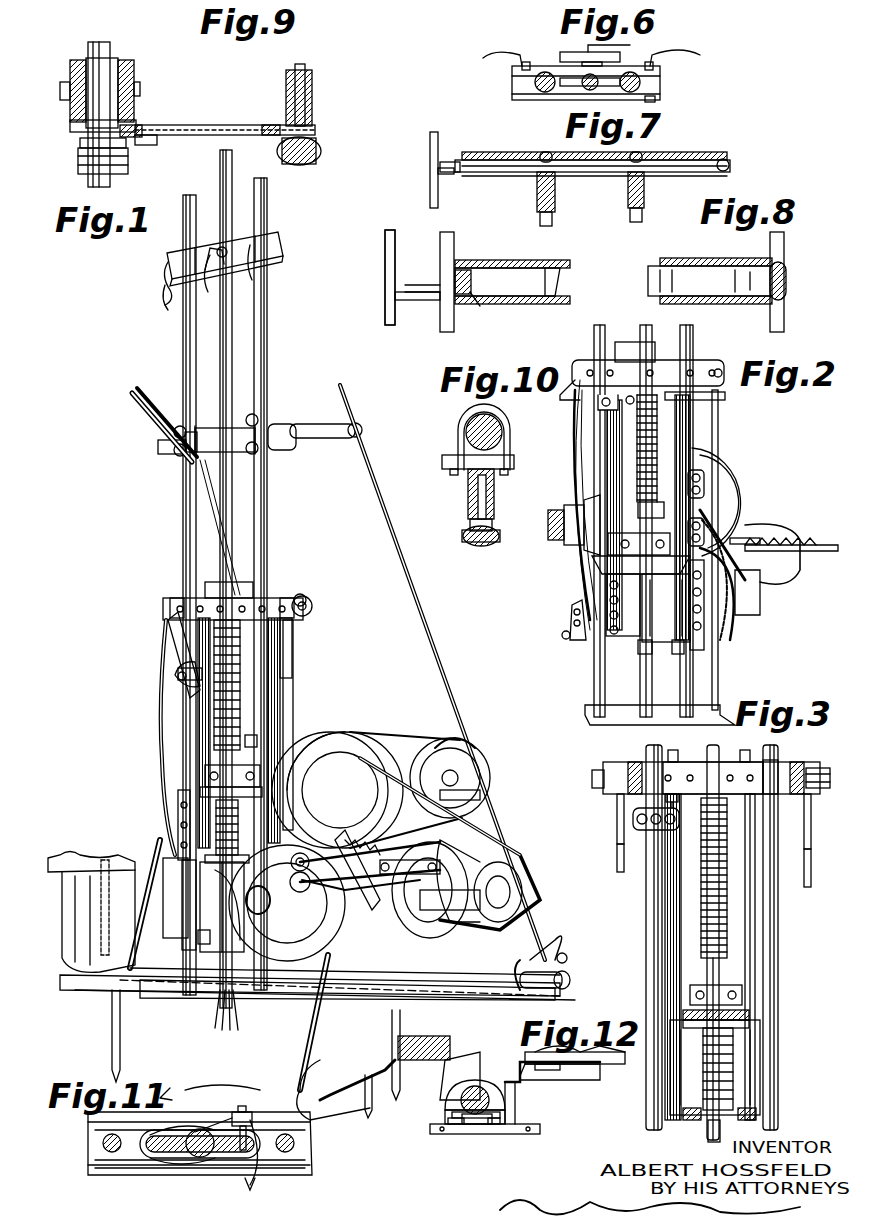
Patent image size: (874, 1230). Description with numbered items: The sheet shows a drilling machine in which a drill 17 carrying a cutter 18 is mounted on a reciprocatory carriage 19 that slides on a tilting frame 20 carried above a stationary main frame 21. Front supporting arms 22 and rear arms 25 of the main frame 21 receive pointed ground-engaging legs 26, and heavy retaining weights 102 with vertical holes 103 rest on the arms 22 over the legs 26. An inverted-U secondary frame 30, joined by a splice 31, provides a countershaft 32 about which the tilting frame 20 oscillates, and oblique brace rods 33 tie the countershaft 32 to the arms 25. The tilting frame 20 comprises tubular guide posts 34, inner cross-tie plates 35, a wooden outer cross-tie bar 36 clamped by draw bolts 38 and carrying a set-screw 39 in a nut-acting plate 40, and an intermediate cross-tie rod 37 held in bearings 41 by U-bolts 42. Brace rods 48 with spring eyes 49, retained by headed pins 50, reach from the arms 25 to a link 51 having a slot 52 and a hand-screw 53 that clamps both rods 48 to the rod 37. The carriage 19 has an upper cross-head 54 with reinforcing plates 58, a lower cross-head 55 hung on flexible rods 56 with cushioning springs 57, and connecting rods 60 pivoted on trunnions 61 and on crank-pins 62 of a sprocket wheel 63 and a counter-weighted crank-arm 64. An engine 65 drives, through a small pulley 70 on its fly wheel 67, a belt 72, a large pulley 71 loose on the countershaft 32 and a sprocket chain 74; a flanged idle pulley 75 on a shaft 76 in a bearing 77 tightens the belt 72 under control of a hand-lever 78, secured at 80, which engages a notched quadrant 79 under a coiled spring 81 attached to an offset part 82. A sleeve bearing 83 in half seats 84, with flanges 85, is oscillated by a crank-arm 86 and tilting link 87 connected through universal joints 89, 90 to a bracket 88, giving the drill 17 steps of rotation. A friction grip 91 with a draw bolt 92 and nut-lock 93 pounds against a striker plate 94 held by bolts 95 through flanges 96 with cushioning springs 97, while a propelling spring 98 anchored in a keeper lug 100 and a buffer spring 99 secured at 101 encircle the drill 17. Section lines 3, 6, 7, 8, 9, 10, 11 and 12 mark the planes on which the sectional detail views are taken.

In FIG. 8, the section line 3 is at (614, 315).
In FIG. 1, the section line 6 is at (268, 266).
In FIG. 1, the section line 7 is at (160, 447).
In FIG. 7, the section line 8 is at (755, 165).
In FIG. 1, the section line 9 is at (232, 592).
In FIG. 1, the section line 10 is at (234, 665).
In FIG. 1, the section line 11 is at (200, 785).
In FIG. 1, the section line 12 is at (523, 836).
In FIG. 9, the drill 17 is at (100, 60).
In FIG. 6, the drill 17 is at (580, 92).
In FIG. 2, the drill 17 is at (642, 345).
In FIG. 3, the drill 17 is at (720, 962).
In FIG. 11, the drill 17 is at (185, 1160).
In FIG. 1, the drill 17 is at (230, 188).
In FIG. 1, the cutter 18 is at (222, 1048).
In FIG. 1, the reciprocatory carriage 19 is at (308, 598).
In FIG. 1, the tilting frame 20 is at (270, 548).
In FIG. 1, the main frame 21 is at (500, 985).
In FIG. 1, the supporting arms 22 is at (318, 1085).
In FIG. 1, the arms 25 is at (566, 970).
In FIG. 1, the ground-engaging legs 26 is at (112, 1034).
In FIG. 1, the secondary frame 30 is at (160, 940).
In FIG. 2, the splice 31 is at (552, 534).
In FIG. 2, the countershaft 32 is at (550, 515).
In FIG. 2, the oblique brace rods 33 is at (762, 590).
In FIG. 12, the oblique brace rods 33 is at (478, 1132).
In FIG. 1, the oblique brace rods 33 is at (515, 930).
In FIG. 6, the tubular guide posts 34 is at (640, 80).
In FIG. 10, the tubular guide posts 34 is at (508, 420).
In FIG. 2, the tubular guide posts 34 is at (598, 345).
In FIG. 3, the tubular guide posts 34 is at (778, 890).
In FIG. 1, the tubular guide posts 34 is at (267, 192).
In FIG. 2, the inner cross-tie plates 35 is at (676, 605).
In FIG. 3, the inner cross-tie plates 35 is at (690, 1052).
In FIG. 1, the inner cross-tie plates 35 is at (182, 915).
In FIG. 6, the outer cross-tie bar 36 is at (512, 76).
In FIG. 1, the outer cross-tie bar 36 is at (283, 240).
In FIG. 7, the intermediate cross-tie rod 37 is at (600, 160).
In FIG. 8, the intermediate cross-tie rod 37 is at (562, 262).
In FIG. 1, the intermediate cross-tie rod 37 is at (160, 442).
In FIG. 6, the draw bolts 38 is at (660, 96).
In FIG. 1, the draw bolts 38 is at (258, 250).
In FIG. 6, the set-screw 39 is at (635, 50).
In FIG. 1, the set-screw 39 is at (175, 300).
In FIG. 6, the nut-acting plate 40 is at (590, 62).
In FIG. 1, the nut-acting plate 40 is at (225, 245).
In FIG. 7, the bearings 41 is at (537, 190).
In FIG. 1, the bearings 41 is at (205, 428).
In FIG. 7, the U-bolts 42 is at (542, 222).
In FIG. 1, the U-bolts 42 is at (178, 428).
In FIG. 7, the oblique brace rods 48 is at (725, 160).
In FIG. 8, the oblique brace rods 48 is at (456, 250).
In FIG. 1, the oblique brace rods 48 is at (152, 398).
In FIG. 1, the open spring eyes 49 is at (540, 975).
In FIG. 1, the removable headed pins 50 is at (568, 952).
In FIG. 7, the link 51 is at (598, 176).
In FIG. 8, the link 51 is at (470, 305).
In FIG. 1, the link 51 is at (358, 426).
In FIG. 7, the longitudinal slot 52 is at (525, 162).
In FIG. 8, the longitudinal slot 52 is at (552, 278).
In FIG. 7, the hand-screw 53 is at (438, 152).
In FIG. 8, the hand-screw 53 is at (385, 282).
In FIG. 1, the hand-screw 53 is at (140, 438).
In FIG. 9, the upper cross-head 54 is at (78, 60).
In FIG. 3, the upper cross-head 54 is at (782, 765).
In FIG. 11, the upper cross-head 54 is at (278, 1130).
In FIG. 3, the lower cross-head 55 is at (756, 1112).
In FIG. 2, the flexible rods 56 is at (690, 440).
In FIG. 3, the flexible rods 56 is at (665, 886).
In FIG. 11, the flexible rods 56 is at (88, 1142).
In FIG. 1, the flexible rods 56 is at (280, 676).
In FIG. 3, the cushioning springs 57 is at (617, 800).
In FIG. 1, the cushioning springs 57 is at (294, 605).
In FIG. 9, the metal reinforcing plates 58 is at (72, 90).
In FIG. 2, the metal reinforcing plates 58 is at (718, 366).
In FIG. 11, the metal reinforcing plates 58 is at (295, 1176).
In FIG. 1, the metal reinforcing plates 58 is at (282, 598).
In FIG. 2, the connecting rods 60 is at (722, 418).
In FIG. 3, the connecting rods 60 is at (617, 850).
In FIG. 1, the connecting rods 60 is at (293, 655).
In FIG. 3, the trunnions 61 is at (600, 775).
In FIG. 1, the trunnions 61 is at (312, 606).
In FIG. 2, the crank-pins 62 is at (562, 636).
In FIG. 1, the crank-pins 62 is at (365, 867).
In FIG. 2, the crank-acting sprocket wheel 63 is at (735, 590).
In FIG. 1, the crank-acting sprocket wheel 63 is at (226, 905).
In FIG. 2, the counter-weighted crank-arm 64 is at (590, 635).
In FIG. 1, the internal combustion engine 65 is at (400, 750).
In FIG. 1, the fly wheel 67 is at (498, 828).
In FIG. 1, the small pulley 70 is at (523, 892).
In FIG. 2, the large pulley 71 is at (706, 500).
In FIG. 1, the large pulley 71 is at (350, 758).
In FIG. 2, the belt 72 is at (735, 475).
In FIG. 1, the belt 72 is at (462, 800).
In FIG. 2, the sprocket chain 74 is at (732, 626).
In FIG. 1, the sprocket chain 74 is at (410, 840).
In FIG. 12, the flanged idle pulley 75 is at (605, 1070).
In FIG. 1, the flanged idle pulley 75 is at (440, 770).
In FIG. 12, the shaft 76 is at (552, 1080).
In FIG. 12, the bearing 77 is at (480, 1130).
In FIG. 2, the hand-lever 78 is at (800, 545).
In FIG. 12, the hand-lever 78 is at (498, 1148).
In FIG. 1, the hand-lever 78 is at (287, 903).
In FIG. 2, the notched quadrant 79 is at (790, 540).
In FIG. 12, the notched quadrant 79 is at (445, 1140).
In FIG. 1, the notched quadrant 79 is at (375, 930).
In FIG. 1, the lever connection 80 is at (430, 890).
In FIG. 2, the coiled spring 81 is at (742, 535).
In FIG. 12, the coiled spring 81 is at (508, 1090).
In FIG. 1, the coiled spring 81 is at (258, 742).
In FIG. 12, the offset part 82 is at (440, 1104).
In FIG. 9, the sleeve bearing 83 is at (142, 128).
In FIG. 3, the sleeve bearing 83 is at (672, 830).
In FIG. 3, the half seats 84 is at (713, 760).
In FIG. 9, the annular external flanges 85 is at (112, 62).
In FIG. 2, the annular external flanges 85 is at (626, 362).
In FIG. 3, the annular external flanges 85 is at (738, 766).
In FIG. 1, the annular external flanges 85 is at (245, 590).
In FIG. 9, the crank-arm 86 is at (220, 126).
In FIG. 2, the crank-arm 86 is at (670, 360).
In FIG. 1, the crank-arm 86 is at (182, 598).
In FIG. 9, the tilting link 87 is at (312, 162).
In FIG. 10, the tilting link 87 is at (470, 522).
In FIG. 2, the tilting link 87 is at (726, 396).
In FIG. 1, the tilting link 87 is at (175, 650).
In FIG. 10, the fixed bracket 88 is at (494, 486).
In FIG. 2, the fixed bracket 88 is at (596, 406).
In FIG. 3, the fixed bracket 88 is at (633, 822).
In FIG. 1, the fixed bracket 88 is at (172, 682).
In FIG. 9, the universal joint 89 is at (312, 136).
In FIG. 10, the universal joint 90 is at (476, 544).
In FIG. 2, the friction grip 91 is at (608, 542).
In FIG. 3, the friction grip 91 is at (690, 992).
In FIG. 11, the friction grip 91 is at (160, 1160).
In FIG. 11, the draw bolt 92 is at (232, 1160).
In FIG. 2, the nut-lock 93 is at (600, 566).
In FIG. 3, the nut-lock 93 is at (750, 996).
In FIG. 11, the nut-lock 93 is at (232, 1116).
In FIG. 1, the nut-lock 93 is at (204, 782).
In FIG. 3, the striker plate 94 is at (750, 1016).
In FIG. 1, the striker plate 94 is at (200, 792).
In FIG. 2, the bolts 95 is at (648, 588).
In FIG. 1, the bolts 95 is at (180, 912).
In FIG. 2, the outturned flanges 96 is at (686, 652).
In FIG. 1, the outturned flanges 96 is at (198, 938).
In FIG. 2, the cushioning springs 97 is at (636, 652).
In FIG. 9, the compression propelling spring 98 is at (128, 168).
In FIG. 2, the compression propelling spring 98 is at (636, 455).
In FIG. 3, the compression propelling spring 98 is at (728, 908).
In FIG. 1, the compression propelling spring 98 is at (242, 700).
In FIG. 3, the compression buffer spring 99 is at (735, 1060).
In FIG. 1, the compression buffer spring 99 is at (212, 860).
In FIG. 9, the keeper lug 100 is at (148, 145).
In FIG. 3, the spring anchorage 101 is at (683, 1106).
In FIG. 1, the retaining weights 102 is at (80, 855).
In FIG. 1, the vertical holes 103 is at (108, 862).